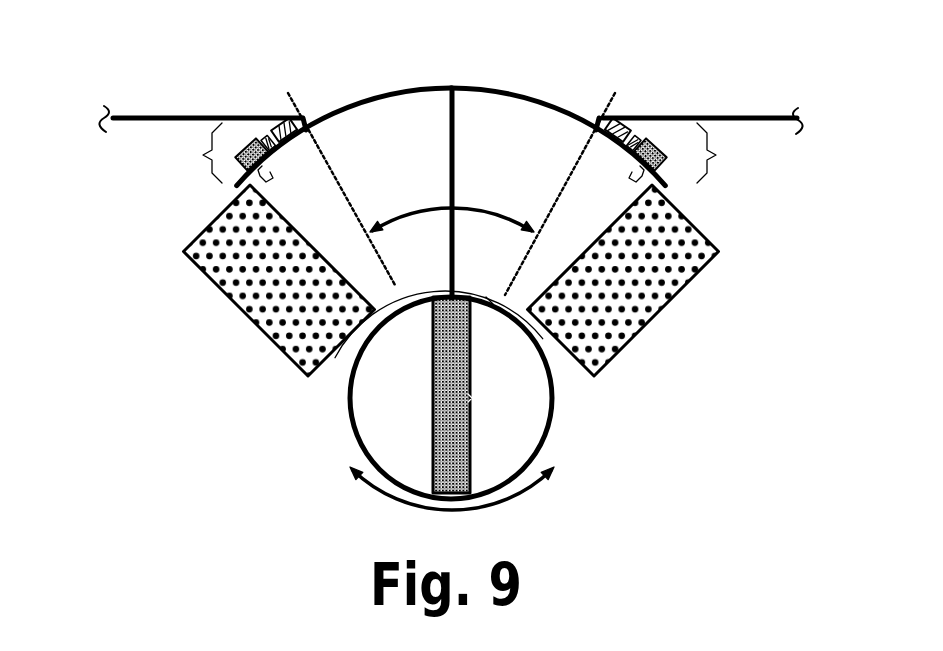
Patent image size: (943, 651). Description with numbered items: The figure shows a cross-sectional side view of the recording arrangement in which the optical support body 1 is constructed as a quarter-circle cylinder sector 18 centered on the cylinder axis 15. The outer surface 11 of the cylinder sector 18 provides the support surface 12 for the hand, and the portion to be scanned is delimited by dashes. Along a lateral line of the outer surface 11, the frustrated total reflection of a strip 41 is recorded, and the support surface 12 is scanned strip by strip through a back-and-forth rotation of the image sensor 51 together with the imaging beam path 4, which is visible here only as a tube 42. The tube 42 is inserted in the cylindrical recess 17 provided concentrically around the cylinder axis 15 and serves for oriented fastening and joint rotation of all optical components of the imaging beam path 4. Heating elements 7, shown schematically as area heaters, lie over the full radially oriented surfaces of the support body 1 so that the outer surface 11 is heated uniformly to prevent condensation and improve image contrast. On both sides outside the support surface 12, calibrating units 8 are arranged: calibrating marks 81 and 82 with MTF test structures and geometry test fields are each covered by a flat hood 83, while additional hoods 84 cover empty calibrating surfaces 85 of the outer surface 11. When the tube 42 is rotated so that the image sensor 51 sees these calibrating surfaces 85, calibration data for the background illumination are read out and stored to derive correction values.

The support body 1 is at (245, 188).
The imaging beam path 4 is at (456, 193).
The heating elements 7 is at (236, 303).
The calibrating units 8 is at (201, 155).
The outer surface 11 is at (365, 102).
The support surface 12 is at (543, 100).
The cylinder axis 15 is at (467, 403).
The cylindrical recess 17 is at (540, 344).
The cylinder sector 18 is at (487, 117).
The strip 41 is at (452, 88).
The tube 42 is at (547, 437).
The image sensor 51 is at (462, 320).
The calibrating mark 81 is at (266, 134).
The calibrating mark 82 is at (662, 157).
The hood 83 is at (283, 120).
The hoods 84 is at (258, 148).
The calibrating surfaces 85 is at (643, 175).